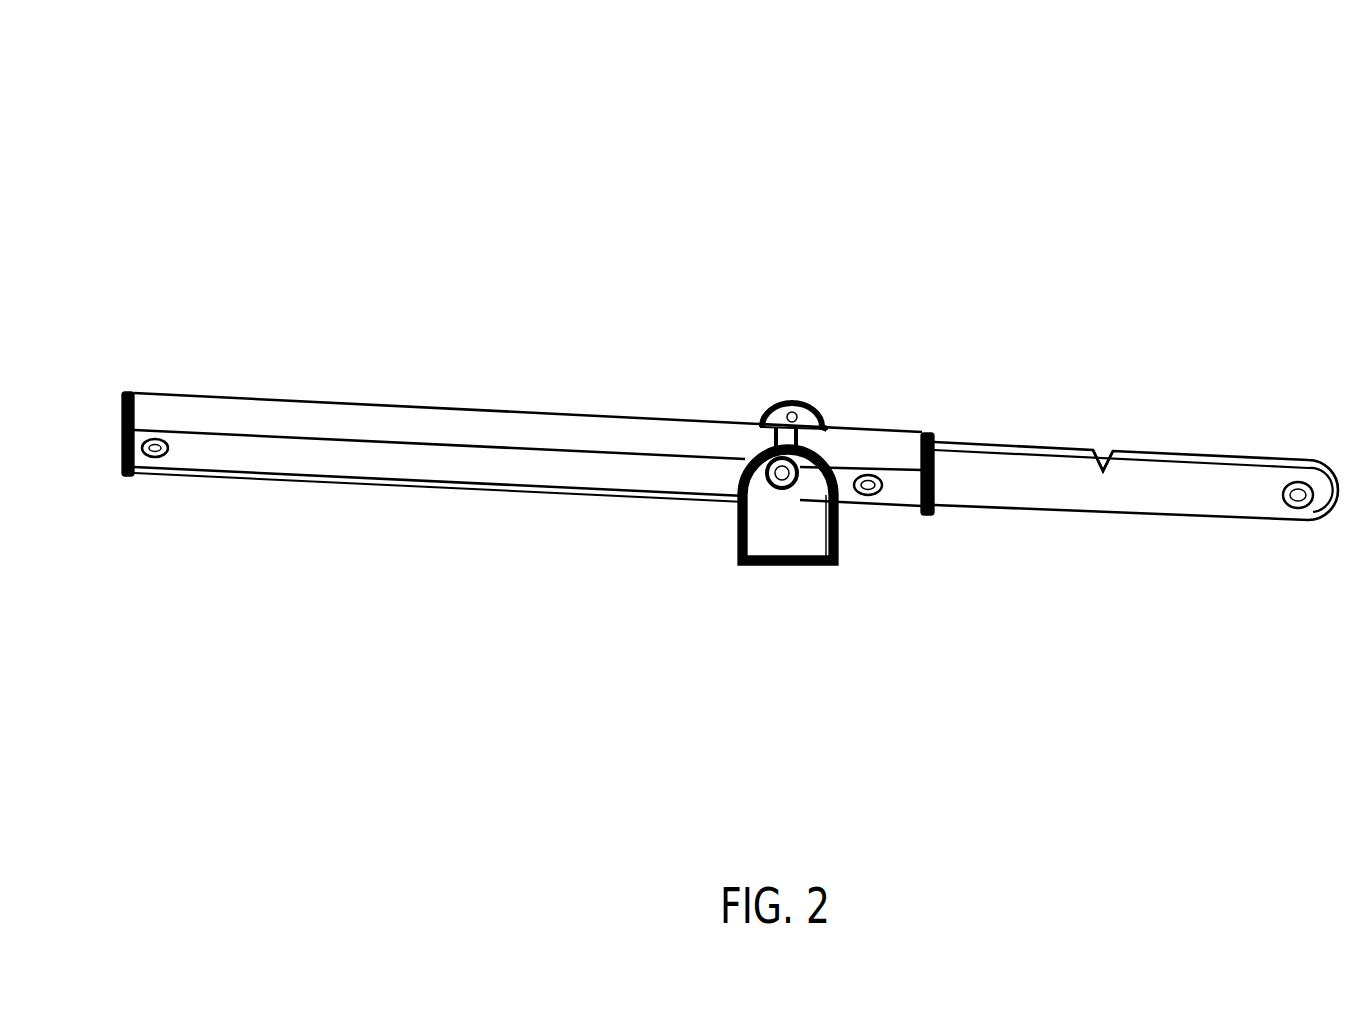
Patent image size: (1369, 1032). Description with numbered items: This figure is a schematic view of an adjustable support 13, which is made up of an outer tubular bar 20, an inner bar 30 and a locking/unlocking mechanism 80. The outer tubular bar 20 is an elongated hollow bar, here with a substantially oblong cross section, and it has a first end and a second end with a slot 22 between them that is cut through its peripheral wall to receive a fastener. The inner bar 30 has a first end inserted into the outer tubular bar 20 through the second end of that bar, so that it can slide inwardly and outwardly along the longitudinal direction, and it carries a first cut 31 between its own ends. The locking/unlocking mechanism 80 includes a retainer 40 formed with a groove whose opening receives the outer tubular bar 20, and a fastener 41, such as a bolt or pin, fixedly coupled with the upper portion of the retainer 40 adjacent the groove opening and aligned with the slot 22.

The adjustable support 13 is at (158, 56).
The outer tubular bar 20 is at (385, 457).
The slot 22 is at (758, 420).
The inner bar 30 is at (1183, 488).
The first cut 31 is at (1103, 468).
The retainer 40 is at (783, 527).
The fastener 41 is at (797, 412).
The locking/unlocking mechanism 80 is at (728, 431).